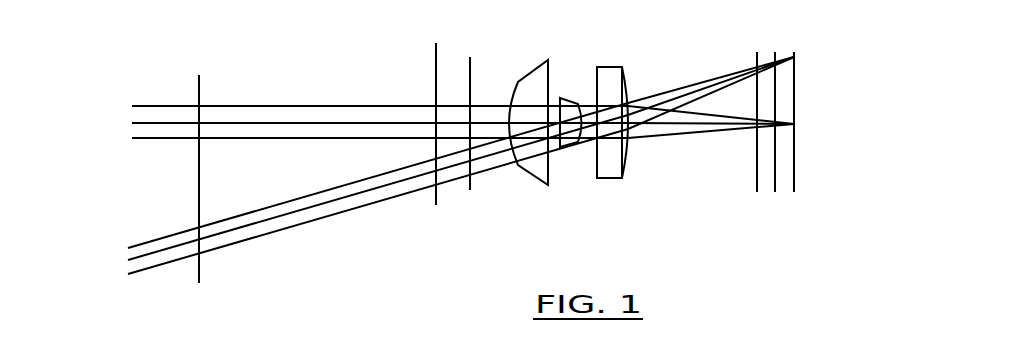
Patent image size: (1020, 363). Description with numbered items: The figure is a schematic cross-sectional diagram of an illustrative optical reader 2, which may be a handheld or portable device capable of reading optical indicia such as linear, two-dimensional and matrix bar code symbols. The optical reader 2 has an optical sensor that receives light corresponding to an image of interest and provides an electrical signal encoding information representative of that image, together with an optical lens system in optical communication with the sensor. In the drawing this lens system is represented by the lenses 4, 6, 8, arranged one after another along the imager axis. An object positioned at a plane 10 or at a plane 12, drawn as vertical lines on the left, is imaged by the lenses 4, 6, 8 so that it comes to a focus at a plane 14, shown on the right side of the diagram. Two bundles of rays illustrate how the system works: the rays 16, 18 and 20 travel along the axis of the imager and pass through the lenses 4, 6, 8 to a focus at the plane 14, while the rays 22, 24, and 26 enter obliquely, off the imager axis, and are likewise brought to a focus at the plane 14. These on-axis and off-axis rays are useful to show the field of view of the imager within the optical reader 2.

The optical reader 2 is at (708, 47).
The lens 4 is at (538, 182).
The lens 6 is at (572, 96).
The lens 8 is at (605, 180).
The plane 10 is at (436, 203).
The plane 12 is at (199, 276).
The plane 14 is at (796, 168).
The ray 16 is at (142, 106).
The ray 18 is at (135, 124).
The ray 20 is at (138, 140).
The ray 22 is at (277, 231).
The ray 24 is at (320, 205).
The ray 26 is at (270, 206).